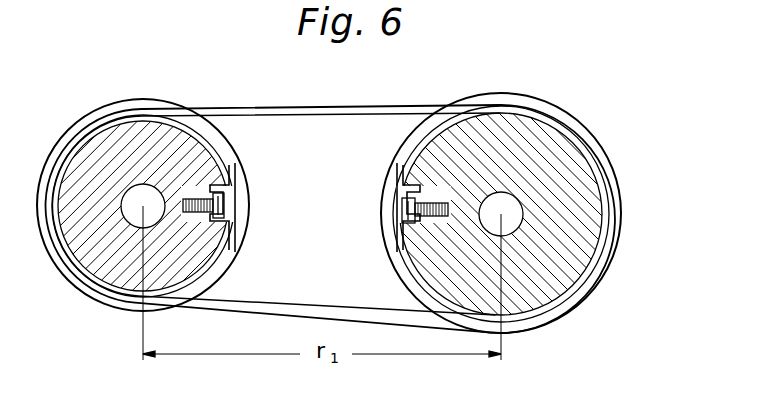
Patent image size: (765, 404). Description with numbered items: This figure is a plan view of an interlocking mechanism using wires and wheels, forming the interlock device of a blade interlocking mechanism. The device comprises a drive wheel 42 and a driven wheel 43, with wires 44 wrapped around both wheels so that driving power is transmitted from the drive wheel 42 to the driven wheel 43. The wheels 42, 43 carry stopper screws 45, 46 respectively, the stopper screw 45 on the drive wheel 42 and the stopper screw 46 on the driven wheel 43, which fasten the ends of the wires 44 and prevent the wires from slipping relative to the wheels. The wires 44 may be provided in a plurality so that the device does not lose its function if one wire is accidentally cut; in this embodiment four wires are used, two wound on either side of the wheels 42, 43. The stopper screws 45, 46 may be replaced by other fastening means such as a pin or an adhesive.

The drive wheel 42 is at (572, 162).
The driven wheel 43 is at (88, 160).
The wires 44 is at (319, 110).
The stopper screw 45 is at (398, 210).
The stopper screw 46 is at (233, 198).